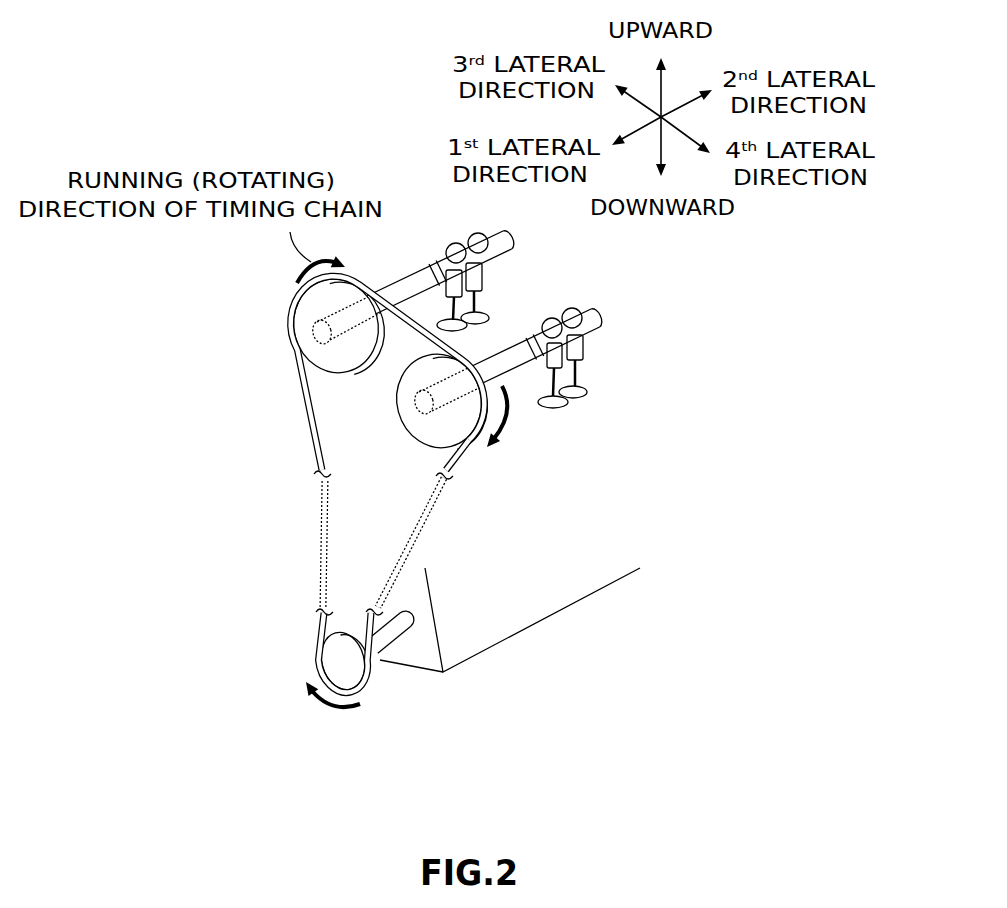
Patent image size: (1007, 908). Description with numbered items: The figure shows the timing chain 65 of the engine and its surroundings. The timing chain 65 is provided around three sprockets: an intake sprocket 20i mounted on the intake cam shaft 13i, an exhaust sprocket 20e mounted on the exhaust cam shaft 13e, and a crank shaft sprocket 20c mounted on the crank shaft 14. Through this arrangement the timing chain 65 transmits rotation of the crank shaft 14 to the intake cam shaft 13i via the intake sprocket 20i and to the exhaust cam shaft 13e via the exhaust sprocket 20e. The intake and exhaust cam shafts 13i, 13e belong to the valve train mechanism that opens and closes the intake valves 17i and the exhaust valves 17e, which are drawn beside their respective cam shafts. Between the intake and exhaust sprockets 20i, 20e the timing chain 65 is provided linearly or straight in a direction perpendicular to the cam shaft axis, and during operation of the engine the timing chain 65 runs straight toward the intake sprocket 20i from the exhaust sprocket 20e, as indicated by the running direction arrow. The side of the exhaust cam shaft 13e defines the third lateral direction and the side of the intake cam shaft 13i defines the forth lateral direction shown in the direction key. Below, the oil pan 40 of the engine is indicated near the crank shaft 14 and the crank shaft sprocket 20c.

The exhaust cam shaft 13e is at (423, 272).
The intake cam shaft 13i is at (510, 355).
The exhaust valves 17e is at (490, 319).
The intake valves 17i is at (582, 394).
The exhaust sprocket 20e is at (302, 318).
The intake sprocket 20i is at (460, 438).
The crank shaft sprocket 20c is at (358, 677).
The timing chain 65 is at (304, 373).
The crank shaft 14 is at (390, 637).
The oil pan 40 is at (475, 640).